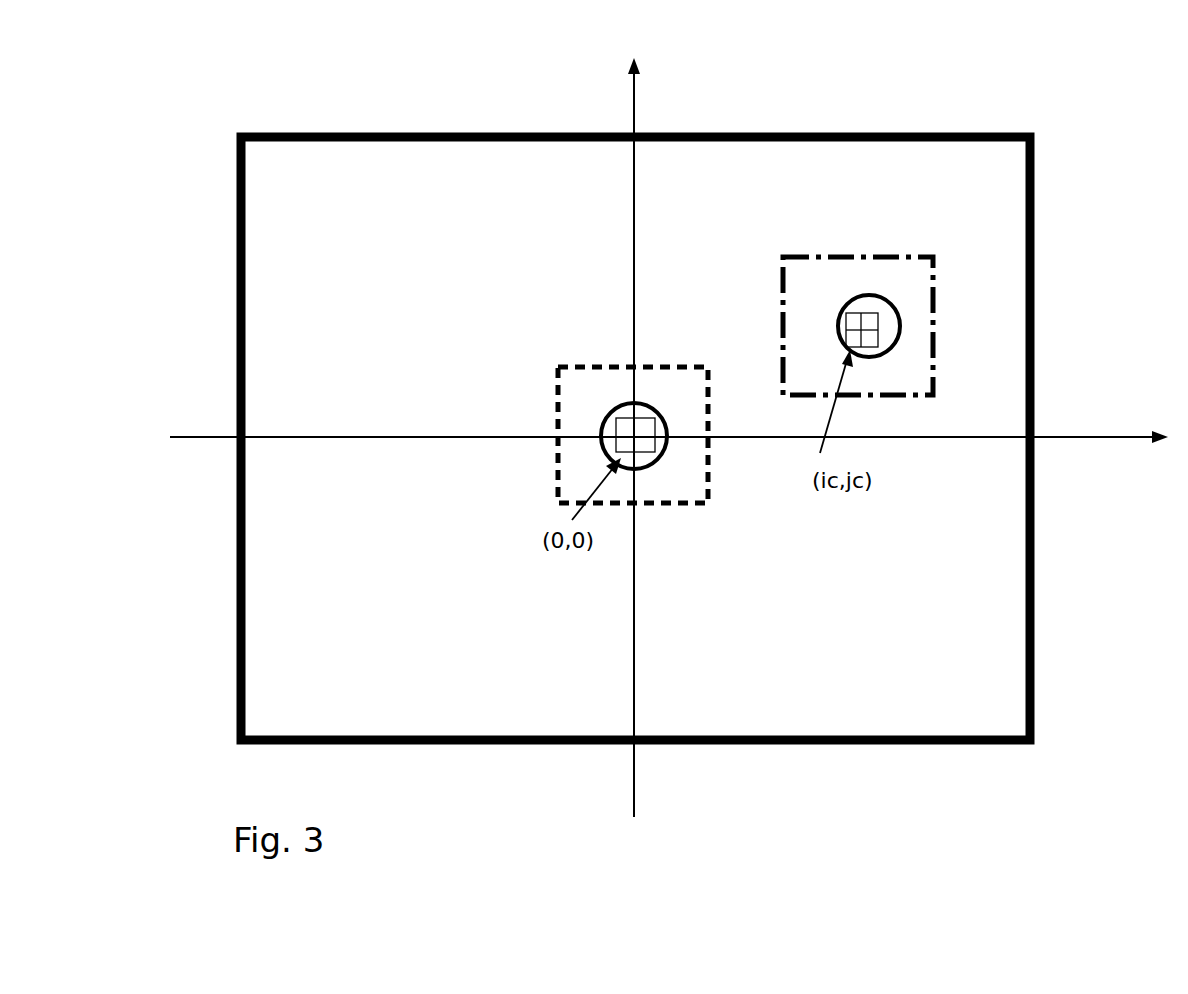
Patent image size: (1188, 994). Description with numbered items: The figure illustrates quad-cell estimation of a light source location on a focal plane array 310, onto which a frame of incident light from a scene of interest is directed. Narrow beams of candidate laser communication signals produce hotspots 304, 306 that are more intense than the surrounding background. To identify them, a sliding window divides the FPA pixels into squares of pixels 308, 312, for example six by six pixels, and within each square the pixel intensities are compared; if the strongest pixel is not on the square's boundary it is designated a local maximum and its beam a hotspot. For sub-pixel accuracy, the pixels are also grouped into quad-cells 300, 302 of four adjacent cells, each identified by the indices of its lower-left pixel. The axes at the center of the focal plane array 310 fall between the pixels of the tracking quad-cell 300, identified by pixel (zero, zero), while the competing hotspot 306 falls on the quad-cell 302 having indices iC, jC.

The quad-cell 300 is at (616, 428).
The quad-cell 302 is at (878, 320).
The hotspot 304 is at (611, 413).
The competing hotspot 306 is at (853, 298).
The square of pixels 308 is at (556, 473).
The focal plane array 310 is at (345, 202).
The square of pixels 312 is at (781, 290).